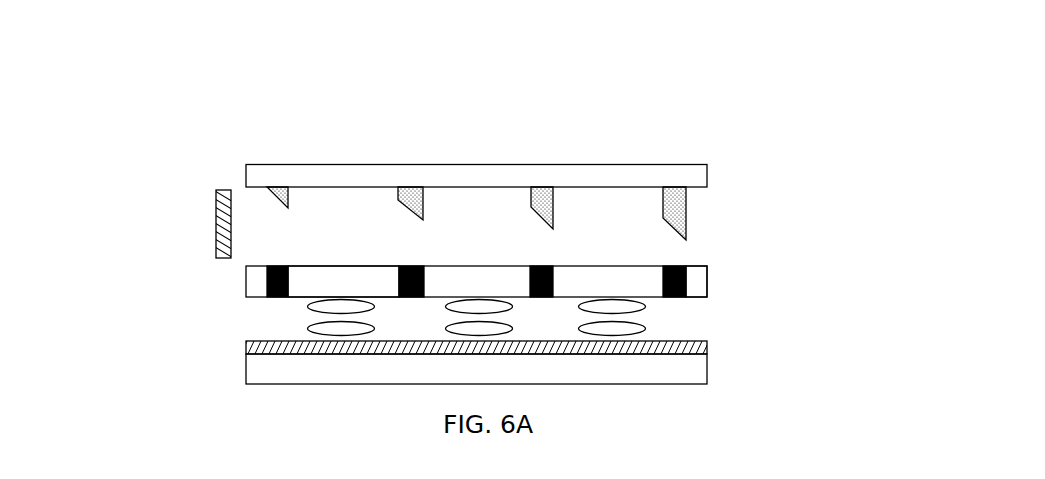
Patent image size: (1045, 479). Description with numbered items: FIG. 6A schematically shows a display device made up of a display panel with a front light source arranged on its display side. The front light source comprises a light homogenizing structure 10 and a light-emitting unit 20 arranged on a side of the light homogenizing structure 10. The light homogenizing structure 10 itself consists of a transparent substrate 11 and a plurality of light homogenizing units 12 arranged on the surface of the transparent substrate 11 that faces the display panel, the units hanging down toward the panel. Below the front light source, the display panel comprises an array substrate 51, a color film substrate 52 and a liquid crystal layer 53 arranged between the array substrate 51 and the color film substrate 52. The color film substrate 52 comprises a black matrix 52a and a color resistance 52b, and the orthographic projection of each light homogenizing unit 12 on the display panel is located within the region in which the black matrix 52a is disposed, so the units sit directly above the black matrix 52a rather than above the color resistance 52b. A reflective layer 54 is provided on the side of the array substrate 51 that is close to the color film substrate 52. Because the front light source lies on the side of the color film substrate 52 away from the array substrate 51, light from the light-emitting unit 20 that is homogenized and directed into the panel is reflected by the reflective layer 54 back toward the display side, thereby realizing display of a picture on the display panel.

The light homogenizing structure 10 is at (533, 203).
The transparent substrate 11 is at (708, 177).
The light homogenizing unit 12 is at (686, 209).
The light-emitting unit 20 is at (215, 213).
The array substrate 51 is at (708, 374).
The color film substrate 52 is at (532, 282).
The black matrix 52a is at (524, 272).
The color resistance 52b is at (522, 291).
The liquid crystal layer 53 is at (708, 327).
The reflective layer 54 is at (708, 348).